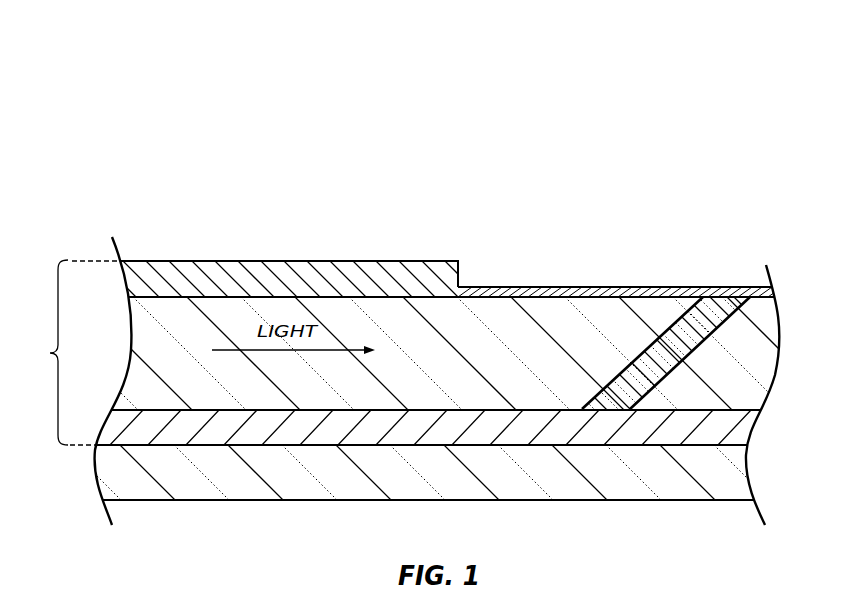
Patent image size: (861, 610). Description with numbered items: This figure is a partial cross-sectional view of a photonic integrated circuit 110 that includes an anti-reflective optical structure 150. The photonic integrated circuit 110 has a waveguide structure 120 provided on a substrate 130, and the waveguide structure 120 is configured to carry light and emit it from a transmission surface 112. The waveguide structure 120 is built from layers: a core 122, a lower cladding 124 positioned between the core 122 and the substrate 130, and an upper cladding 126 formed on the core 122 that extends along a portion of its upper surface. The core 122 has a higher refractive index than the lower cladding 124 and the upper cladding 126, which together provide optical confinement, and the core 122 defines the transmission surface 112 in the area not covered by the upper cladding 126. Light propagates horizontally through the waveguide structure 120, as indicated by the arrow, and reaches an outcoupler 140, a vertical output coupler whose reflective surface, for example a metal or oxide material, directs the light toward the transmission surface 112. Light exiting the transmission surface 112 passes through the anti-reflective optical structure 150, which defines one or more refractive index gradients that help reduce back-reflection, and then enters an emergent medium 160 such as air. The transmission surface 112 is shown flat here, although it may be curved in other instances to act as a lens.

The photonic integrated circuit 110 is at (673, 50).
The transmission surface 112 is at (517, 292).
The waveguide structure 120 is at (403, 352).
The core 122 is at (781, 356).
The lower cladding 124 is at (756, 431).
The upper cladding 126 is at (277, 259).
The substrate 130 is at (752, 471).
The outcoupler 140 is at (663, 333).
The anti-reflective optical structure 150 is at (588, 278).
The emergent medium 160 is at (712, 246).